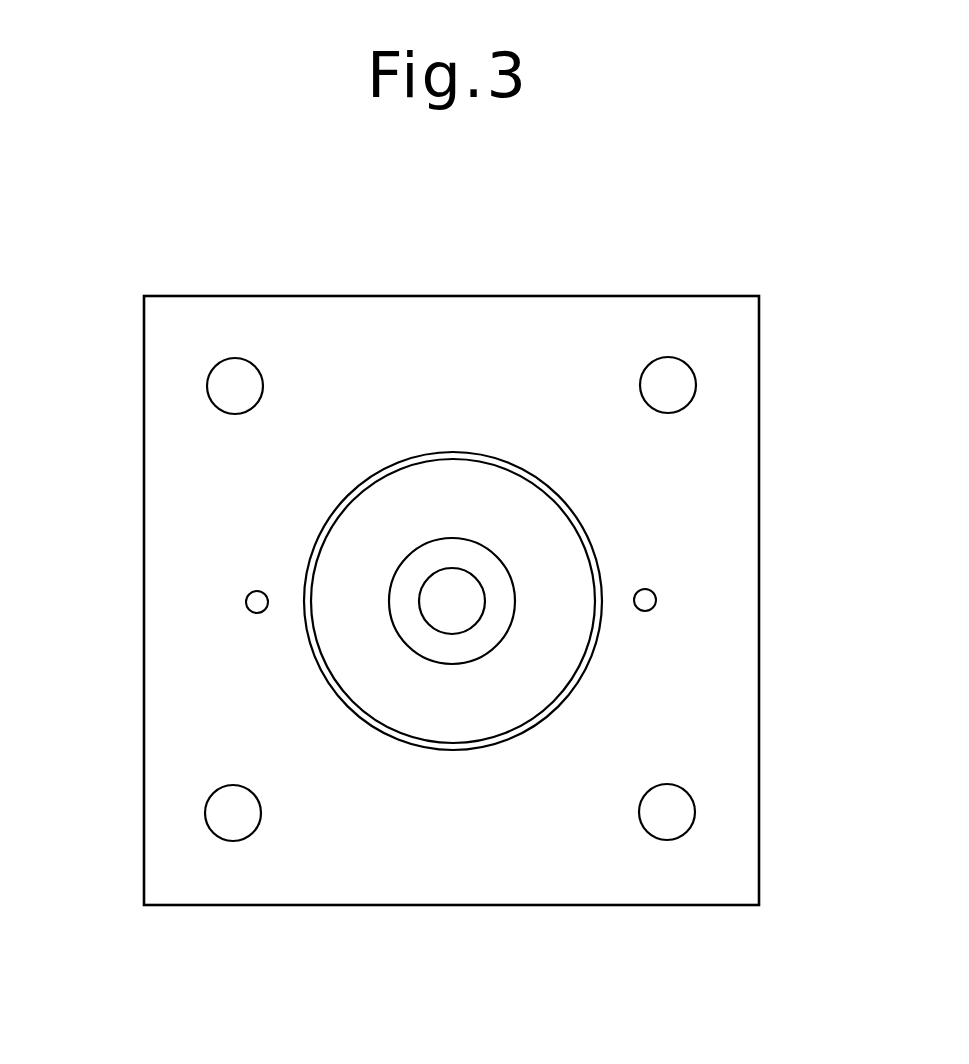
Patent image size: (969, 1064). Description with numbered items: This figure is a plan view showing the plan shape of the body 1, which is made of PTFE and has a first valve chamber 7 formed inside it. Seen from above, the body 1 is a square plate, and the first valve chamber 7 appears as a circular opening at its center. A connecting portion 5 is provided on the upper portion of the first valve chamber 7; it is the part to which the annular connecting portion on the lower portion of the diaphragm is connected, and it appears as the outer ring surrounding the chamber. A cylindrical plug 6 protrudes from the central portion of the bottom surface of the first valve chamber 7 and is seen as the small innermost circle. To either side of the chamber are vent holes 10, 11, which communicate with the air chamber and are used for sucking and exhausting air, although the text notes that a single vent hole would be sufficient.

The body 1 is at (335, 338).
The connecting portion 5 is at (587, 537).
The cylindrical plug 6 is at (463, 605).
The first valve chamber 7 is at (403, 590).
The vent hole 10 is at (657, 596).
The vent hole 11 is at (245, 599).